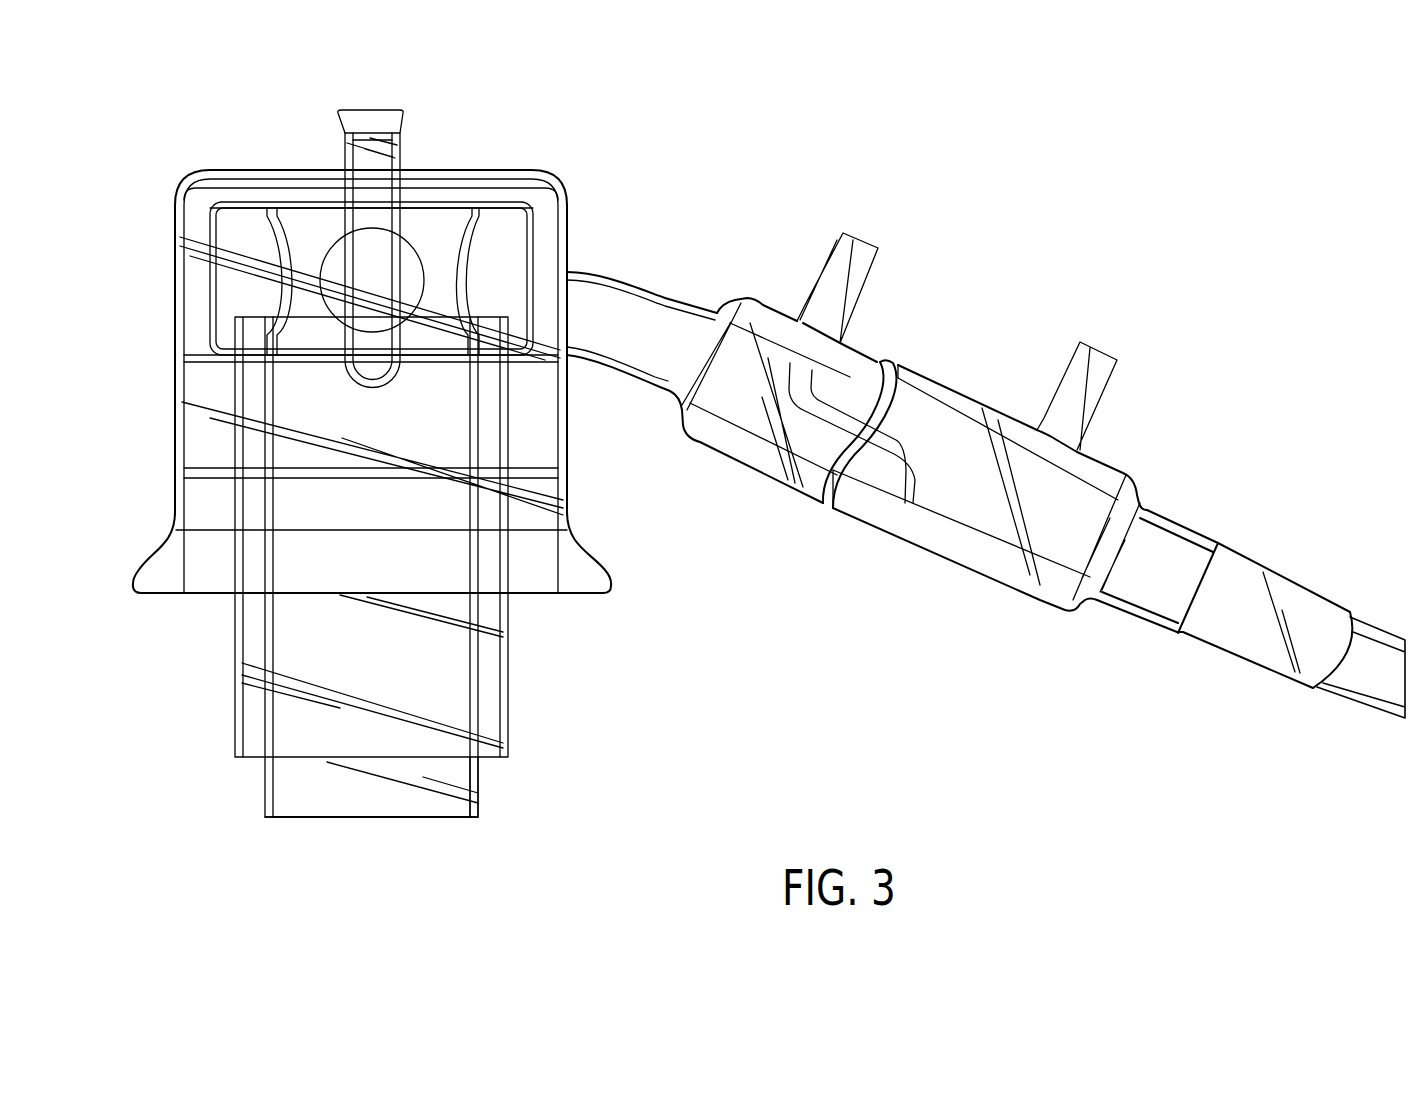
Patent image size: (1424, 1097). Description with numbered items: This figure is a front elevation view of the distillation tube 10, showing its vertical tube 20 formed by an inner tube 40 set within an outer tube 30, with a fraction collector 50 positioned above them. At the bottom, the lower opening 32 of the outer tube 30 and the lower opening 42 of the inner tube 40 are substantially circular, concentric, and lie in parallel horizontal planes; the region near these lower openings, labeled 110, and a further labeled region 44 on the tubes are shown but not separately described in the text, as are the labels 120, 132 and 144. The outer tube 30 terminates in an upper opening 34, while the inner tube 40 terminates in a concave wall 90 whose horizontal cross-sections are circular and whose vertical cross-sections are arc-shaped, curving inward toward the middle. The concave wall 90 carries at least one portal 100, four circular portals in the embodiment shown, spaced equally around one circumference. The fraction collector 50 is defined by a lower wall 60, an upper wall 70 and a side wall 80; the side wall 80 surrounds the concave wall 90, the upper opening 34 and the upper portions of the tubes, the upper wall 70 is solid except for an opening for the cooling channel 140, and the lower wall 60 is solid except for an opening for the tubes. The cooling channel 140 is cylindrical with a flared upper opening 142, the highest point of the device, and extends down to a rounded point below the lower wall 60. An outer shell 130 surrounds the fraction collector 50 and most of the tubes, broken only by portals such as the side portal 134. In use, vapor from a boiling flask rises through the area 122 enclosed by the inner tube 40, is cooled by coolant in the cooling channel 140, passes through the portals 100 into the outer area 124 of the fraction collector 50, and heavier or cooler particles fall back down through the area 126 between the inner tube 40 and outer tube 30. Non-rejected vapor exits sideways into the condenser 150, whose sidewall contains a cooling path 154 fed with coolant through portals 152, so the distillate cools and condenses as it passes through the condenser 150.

The distillation tube 10 is at (535, 147).
The vertical tube 20 is at (505, 638).
The outer tube 30 is at (503, 685).
The lower opening of the outer tube 32 is at (483, 760).
The upper opening of the outer tube 34 is at (498, 318).
The inner tube 40 is at (477, 790).
The lower opening of the inner tube 42 is at (415, 817).
The side wall 44 is at (358, 693).
The fraction collector 50 is at (213, 225).
The lower wall 60 is at (255, 353).
The upper wall 70 is at (420, 207).
The side wall 80 is at (532, 230).
The concave wall 90 is at (277, 233).
The portal 100 is at (460, 308).
The lower end 110 is at (310, 828).
The intermediate section 120 is at (305, 407).
The area enclosed by the inner wall 122 is at (337, 612).
The outer area of the fraction collector 124 is at (235, 292).
The area between the inner wall and the outer wall 126 is at (487, 715).
The outer shell 130 is at (536, 518).
The arm channel 132 is at (567, 318).
The side portal 134 is at (550, 593).
The cooling channel 140 is at (400, 157).
The upper opening of the cooling channel 142 is at (372, 108).
The tab slot 144 is at (363, 217).
The condenser 150 is at (750, 299).
The portals 152 is at (878, 262).
The cooling path 154 is at (872, 348).